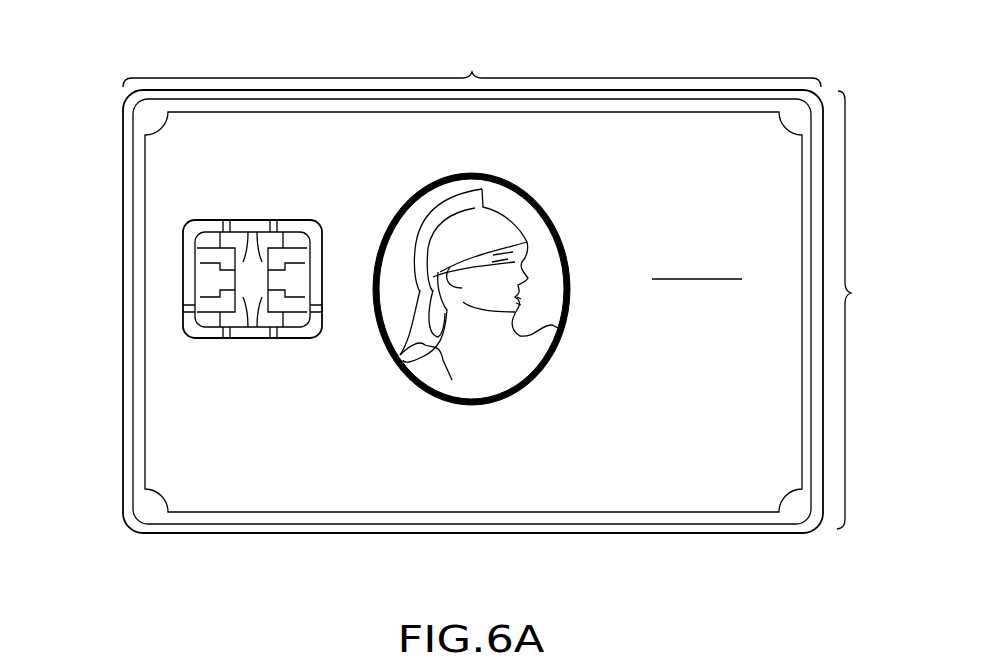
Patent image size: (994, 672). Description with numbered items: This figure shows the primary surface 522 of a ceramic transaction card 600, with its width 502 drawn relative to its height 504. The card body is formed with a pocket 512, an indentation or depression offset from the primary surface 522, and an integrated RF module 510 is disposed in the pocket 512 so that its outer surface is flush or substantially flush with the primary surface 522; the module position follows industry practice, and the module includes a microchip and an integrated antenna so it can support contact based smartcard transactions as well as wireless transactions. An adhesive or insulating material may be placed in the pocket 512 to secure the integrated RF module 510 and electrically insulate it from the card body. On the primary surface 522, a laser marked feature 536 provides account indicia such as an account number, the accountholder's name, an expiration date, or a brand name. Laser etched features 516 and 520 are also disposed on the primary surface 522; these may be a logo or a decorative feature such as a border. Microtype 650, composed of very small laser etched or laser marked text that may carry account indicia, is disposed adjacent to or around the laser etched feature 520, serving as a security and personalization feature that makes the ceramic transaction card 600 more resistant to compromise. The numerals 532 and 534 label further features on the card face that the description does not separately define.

The ceramic transaction card 600 is at (468, 309).
The width 502 is at (472, 62).
The height 504 is at (865, 310).
The integrated RF module 510 is at (215, 272).
The pocket 512 is at (183, 266).
The laser etched feature 516 is at (122, 470).
The laser etched feature 520 is at (525, 257).
The primary surface 522 is at (735, 132).
The issuer name 532 is at (585, 133).
The security code and expiration date 534 is at (740, 245).
The laser marked feature 536 is at (236, 460).
The microtype 650 is at (519, 293).